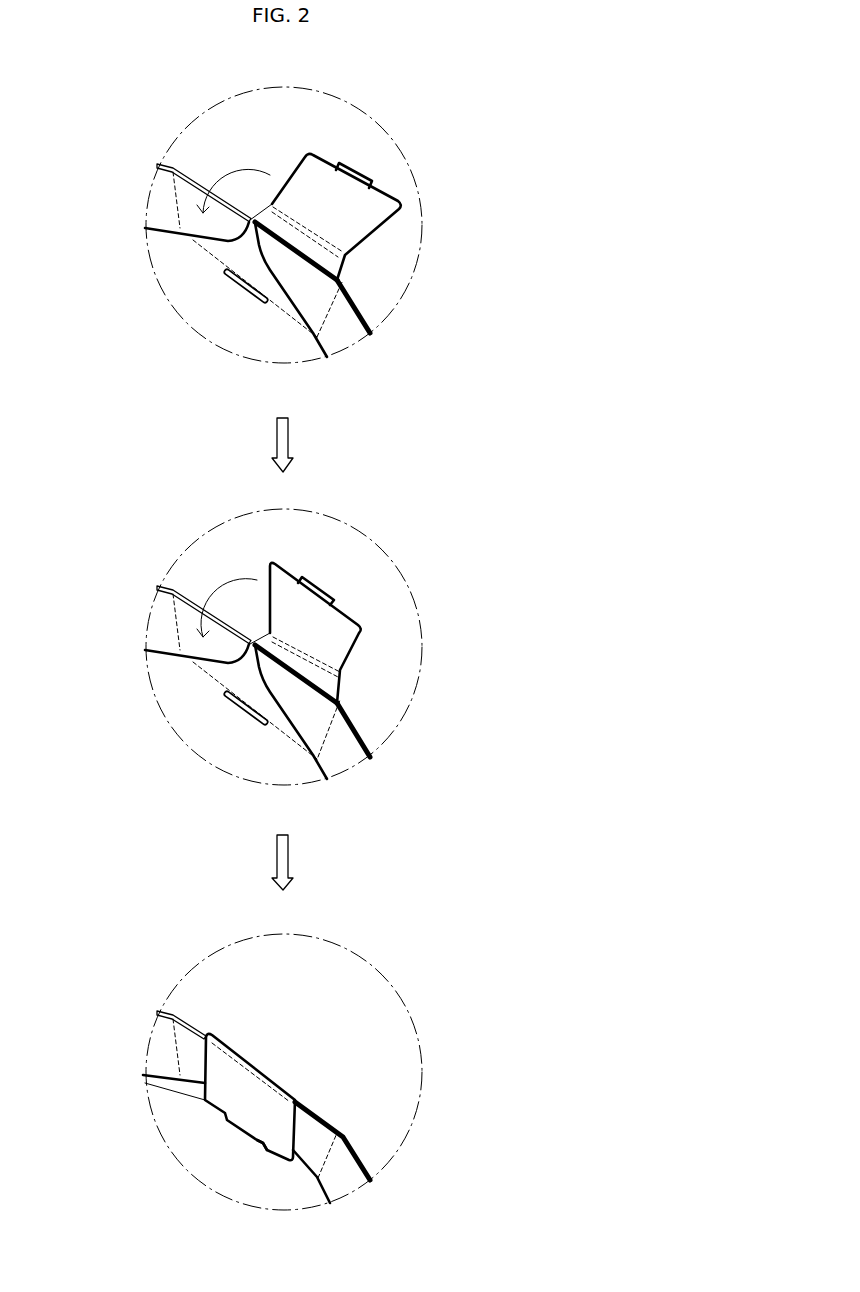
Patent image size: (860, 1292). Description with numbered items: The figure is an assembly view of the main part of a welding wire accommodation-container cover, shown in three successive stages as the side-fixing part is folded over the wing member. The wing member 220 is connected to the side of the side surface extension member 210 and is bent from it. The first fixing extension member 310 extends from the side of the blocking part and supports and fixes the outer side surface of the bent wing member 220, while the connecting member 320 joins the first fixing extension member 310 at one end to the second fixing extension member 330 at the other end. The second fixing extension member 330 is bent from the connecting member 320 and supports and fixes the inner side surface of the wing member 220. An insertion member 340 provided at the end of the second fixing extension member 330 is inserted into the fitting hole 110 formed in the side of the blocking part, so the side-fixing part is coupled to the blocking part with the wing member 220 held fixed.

The fitting hole 110 is at (233, 277).
The side surface extension member 210 is at (335, 335).
The wing member 220 is at (192, 222).
The first fixing extension member 310 is at (337, 268).
The connecting member 320 is at (328, 263).
The second fixing extension member 330 is at (375, 207).
The insertion member 340 is at (353, 168).